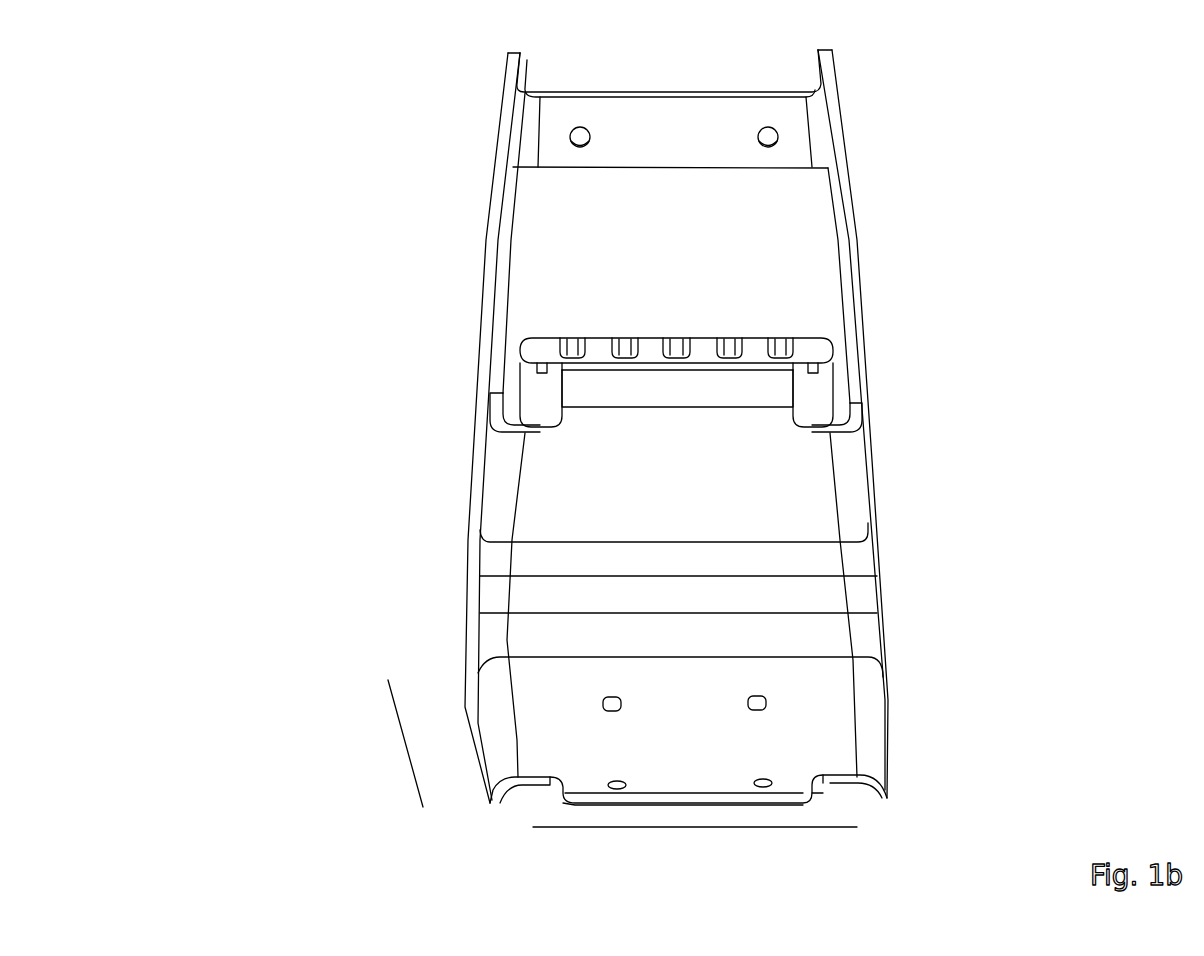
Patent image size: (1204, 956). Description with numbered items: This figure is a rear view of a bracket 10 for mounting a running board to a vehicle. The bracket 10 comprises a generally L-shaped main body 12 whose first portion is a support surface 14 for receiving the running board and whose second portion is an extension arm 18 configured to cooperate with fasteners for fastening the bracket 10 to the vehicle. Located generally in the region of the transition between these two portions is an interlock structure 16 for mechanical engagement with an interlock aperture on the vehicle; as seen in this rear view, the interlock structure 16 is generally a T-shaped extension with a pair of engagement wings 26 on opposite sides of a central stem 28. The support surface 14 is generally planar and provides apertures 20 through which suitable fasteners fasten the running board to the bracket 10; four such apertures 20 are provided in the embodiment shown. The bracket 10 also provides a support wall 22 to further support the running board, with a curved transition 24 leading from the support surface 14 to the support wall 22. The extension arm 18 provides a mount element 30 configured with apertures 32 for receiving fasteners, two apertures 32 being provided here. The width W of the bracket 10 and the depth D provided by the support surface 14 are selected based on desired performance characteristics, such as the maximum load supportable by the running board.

The bracket 10 is at (258, 177).
The main body 12 is at (480, 538).
The support surface 14 is at (802, 732).
The interlock structure 16 is at (703, 343).
The extension arm 18 is at (853, 345).
The aperture 20 is at (612, 700).
The support wall 22 is at (590, 508).
The curved transition 24 is at (817, 588).
The engagement wings 26 is at (537, 347).
The central stem 28 is at (657, 387).
The mount element 30 is at (683, 140).
The aperture 32 is at (579, 142).
The depth D is at (410, 763).
The width W is at (708, 832).